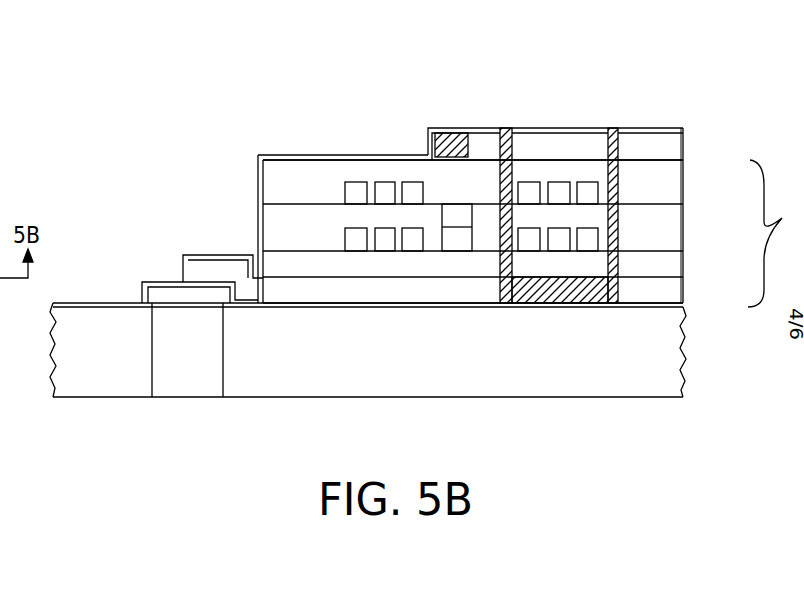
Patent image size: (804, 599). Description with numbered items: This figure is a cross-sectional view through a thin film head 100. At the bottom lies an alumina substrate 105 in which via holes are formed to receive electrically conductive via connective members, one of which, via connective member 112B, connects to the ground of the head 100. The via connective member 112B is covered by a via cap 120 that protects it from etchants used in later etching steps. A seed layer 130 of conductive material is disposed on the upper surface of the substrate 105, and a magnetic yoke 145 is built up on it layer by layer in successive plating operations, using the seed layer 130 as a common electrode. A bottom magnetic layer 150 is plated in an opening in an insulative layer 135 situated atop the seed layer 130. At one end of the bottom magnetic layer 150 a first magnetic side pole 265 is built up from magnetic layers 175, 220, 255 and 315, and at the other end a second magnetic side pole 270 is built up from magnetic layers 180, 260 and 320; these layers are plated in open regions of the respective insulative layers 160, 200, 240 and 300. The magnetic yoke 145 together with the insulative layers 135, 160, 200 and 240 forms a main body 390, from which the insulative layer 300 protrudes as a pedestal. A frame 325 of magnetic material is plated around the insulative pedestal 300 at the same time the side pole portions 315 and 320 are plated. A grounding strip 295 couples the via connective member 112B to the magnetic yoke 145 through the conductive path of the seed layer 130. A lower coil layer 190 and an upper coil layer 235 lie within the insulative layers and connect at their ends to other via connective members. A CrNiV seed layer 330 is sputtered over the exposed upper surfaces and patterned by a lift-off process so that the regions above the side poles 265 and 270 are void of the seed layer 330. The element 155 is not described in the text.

The thin film head 100 is at (510, 443).
The alumina substrate 105 is at (63, 360).
The via connective member 112B is at (225, 355).
The via cap 120 is at (147, 298).
The seed layer 130 is at (665, 310).
The insulative layer 135 is at (673, 292).
The magnetic yoke 145 is at (619, 227).
The bottom magnetic layer 150 is at (562, 290).
The lower interconnect 155 is at (0, 498).
The insulative layer 160 is at (673, 265).
The magnetic layer 175 is at (508, 277).
The magnetic layer 180 is at (620, 240).
The lower coil layer 190 is at (355, 238).
The insulative layer 200 is at (678, 241).
The magnetic layer 220 is at (502, 228).
The upper coil layer 235 is at (355, 192).
The insulative layer 240 is at (678, 198).
The magnetic layer 255 is at (500, 186).
The magnetic layer 260 is at (619, 186).
The first magnetic side pole 265 is at (497, 170).
The second magnetic side pole 270 is at (618, 167).
The grounding strip 295 is at (195, 272).
The insulative layer 300 is at (658, 142).
The magnetic layer 315 is at (507, 135).
The magnetic layer 320 is at (612, 128).
The frame 325 is at (450, 135).
The seed layer 330 is at (645, 128).
The main body 390 is at (775, 233).